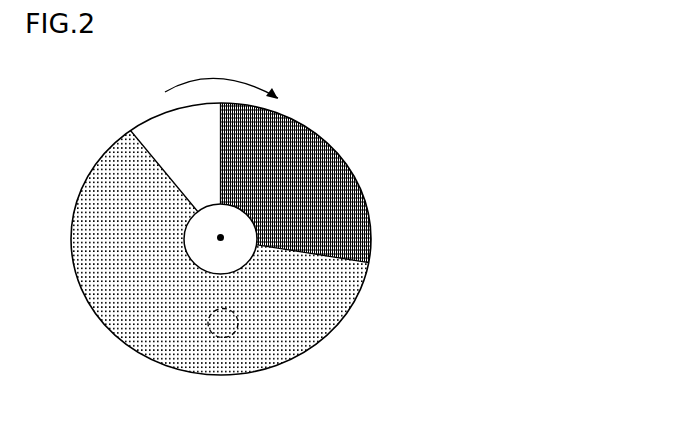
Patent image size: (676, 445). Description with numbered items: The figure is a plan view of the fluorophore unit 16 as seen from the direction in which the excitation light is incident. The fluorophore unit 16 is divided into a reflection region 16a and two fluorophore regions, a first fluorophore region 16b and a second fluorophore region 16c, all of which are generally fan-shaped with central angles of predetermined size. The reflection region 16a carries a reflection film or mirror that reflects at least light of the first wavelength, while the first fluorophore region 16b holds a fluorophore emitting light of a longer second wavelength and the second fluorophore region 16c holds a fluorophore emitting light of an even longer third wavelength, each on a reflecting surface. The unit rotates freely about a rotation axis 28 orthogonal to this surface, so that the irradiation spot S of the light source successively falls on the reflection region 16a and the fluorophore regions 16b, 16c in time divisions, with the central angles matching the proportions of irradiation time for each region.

The fluorophore unit 16 is at (250, 245).
The reflection region 16a is at (150, 126).
The first fluorophore region 16b is at (303, 317).
The second fluorophore region 16c is at (328, 172).
The rotation axis 28 is at (220, 238).
The irradiation spot S is at (222, 338).